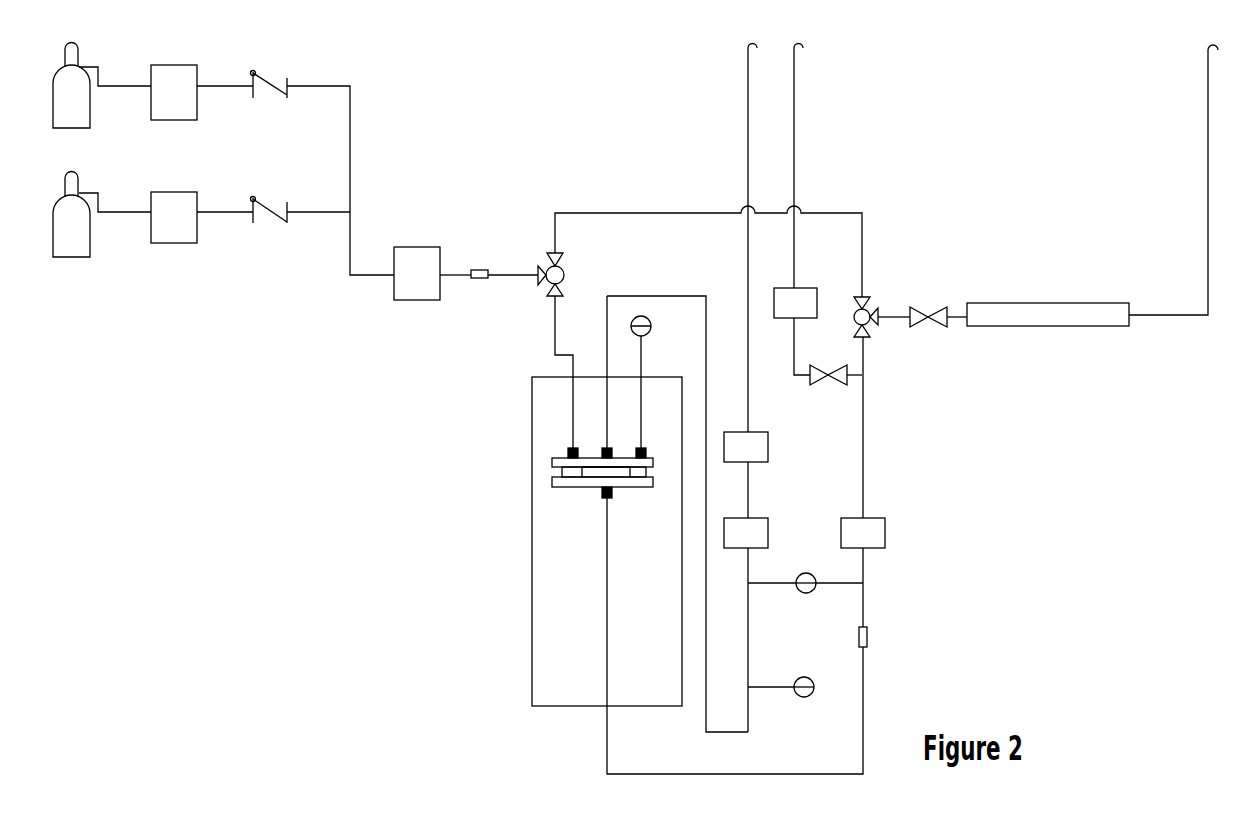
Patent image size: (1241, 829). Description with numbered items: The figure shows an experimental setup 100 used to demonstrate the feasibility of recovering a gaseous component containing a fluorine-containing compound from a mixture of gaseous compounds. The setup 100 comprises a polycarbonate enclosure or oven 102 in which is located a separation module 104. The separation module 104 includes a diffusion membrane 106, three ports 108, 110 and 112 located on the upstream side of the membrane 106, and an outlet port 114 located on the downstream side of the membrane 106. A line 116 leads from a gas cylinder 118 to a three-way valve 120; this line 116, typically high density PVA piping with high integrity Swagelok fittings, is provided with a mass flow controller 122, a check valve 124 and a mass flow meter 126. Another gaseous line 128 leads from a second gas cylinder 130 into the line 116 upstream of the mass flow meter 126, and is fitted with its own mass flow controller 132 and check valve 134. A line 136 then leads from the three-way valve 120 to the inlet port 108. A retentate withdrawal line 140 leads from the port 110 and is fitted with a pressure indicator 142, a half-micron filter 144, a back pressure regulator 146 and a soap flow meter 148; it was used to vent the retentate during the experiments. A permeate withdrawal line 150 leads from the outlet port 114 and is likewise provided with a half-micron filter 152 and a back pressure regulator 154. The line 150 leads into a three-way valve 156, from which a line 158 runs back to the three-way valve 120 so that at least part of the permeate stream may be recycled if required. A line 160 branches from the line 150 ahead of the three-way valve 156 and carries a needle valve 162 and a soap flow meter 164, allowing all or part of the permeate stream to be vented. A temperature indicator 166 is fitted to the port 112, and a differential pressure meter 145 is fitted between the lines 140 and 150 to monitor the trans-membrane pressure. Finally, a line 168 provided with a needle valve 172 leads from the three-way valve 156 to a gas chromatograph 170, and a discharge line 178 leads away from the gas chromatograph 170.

The experimental setup 100 is at (1043, 70).
The polycarbonate enclosure or oven 102 is at (530, 642).
The separation module 104 is at (547, 478).
The diffusion membrane 106 is at (593, 472).
The inlet port 108 is at (567, 452).
The port 110 is at (597, 447).
The port 112 is at (647, 447).
The outlet port 114 is at (613, 497).
The line 116 is at (335, 85).
The gas cylinder 118 is at (90, 112).
The 3-way valve 120 is at (533, 260).
The mass flow controller 122 is at (192, 63).
The check valve 124 is at (273, 73).
The mass flow meter 126 is at (425, 242).
The gaseous line 128 is at (222, 217).
The gas cylinder 130 is at (90, 237).
The mass flow controller 132 is at (192, 190).
The check valve 134 is at (273, 197).
The line 136 is at (550, 340).
The retentate withdrawal line 140 is at (655, 293).
The pressure indicator 142 is at (810, 698).
The 0.5 μ filter 144 is at (750, 640).
The differential pressure meter 145 is at (807, 572).
The back pressure regulator 146 is at (762, 518).
The soap flow meter 148 is at (762, 433).
The permeate withdrawal line 150 is at (705, 775).
The 0.5 μ filter 152 is at (873, 633).
The back pressure regulator 154 is at (880, 517).
The 3-way valve 156 is at (872, 297).
The line 158 is at (832, 208).
The line 160 is at (797, 130).
The needle valve 162 is at (827, 378).
The soap flow meter 164 is at (835, 258).
The temperature indicator 166 is at (652, 331).
The line 168 is at (897, 310).
The gas chromatograph 170 is at (1040, 302).
The needle valve 172 is at (928, 328).
The discharge line 178 is at (1205, 152).